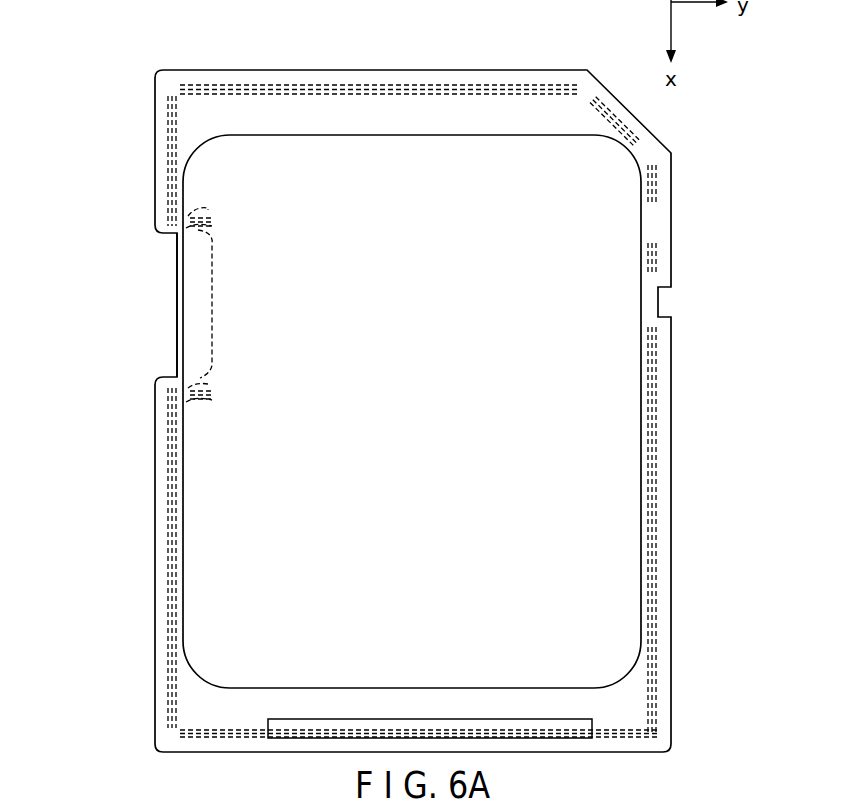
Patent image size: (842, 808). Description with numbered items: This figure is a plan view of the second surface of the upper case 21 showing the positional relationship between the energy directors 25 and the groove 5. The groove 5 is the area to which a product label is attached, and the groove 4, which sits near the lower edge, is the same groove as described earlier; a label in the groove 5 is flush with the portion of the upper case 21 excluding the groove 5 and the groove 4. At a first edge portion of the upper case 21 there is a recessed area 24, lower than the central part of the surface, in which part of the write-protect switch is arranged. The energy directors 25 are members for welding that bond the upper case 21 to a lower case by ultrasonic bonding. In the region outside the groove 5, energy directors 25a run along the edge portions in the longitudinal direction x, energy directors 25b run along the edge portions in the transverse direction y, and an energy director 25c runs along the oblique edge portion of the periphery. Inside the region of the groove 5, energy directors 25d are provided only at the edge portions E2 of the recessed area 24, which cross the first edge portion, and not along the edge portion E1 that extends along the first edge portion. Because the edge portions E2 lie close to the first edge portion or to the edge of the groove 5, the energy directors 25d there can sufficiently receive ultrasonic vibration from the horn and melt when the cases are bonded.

The upper case 21 is at (498, 52).
The recessed area 24 is at (180, 292).
The groove 4 is at (407, 718).
The groove 5 is at (408, 136).
The energy directors 25 is at (646, 464).
The energy directors 25a is at (168, 121).
The energy directors 25b is at (220, 85).
The energy director 25c is at (630, 112).
The energy directors 25d is at (192, 214).
The edge portion E1 is at (214, 310).
The edge portions E2 is at (215, 228).